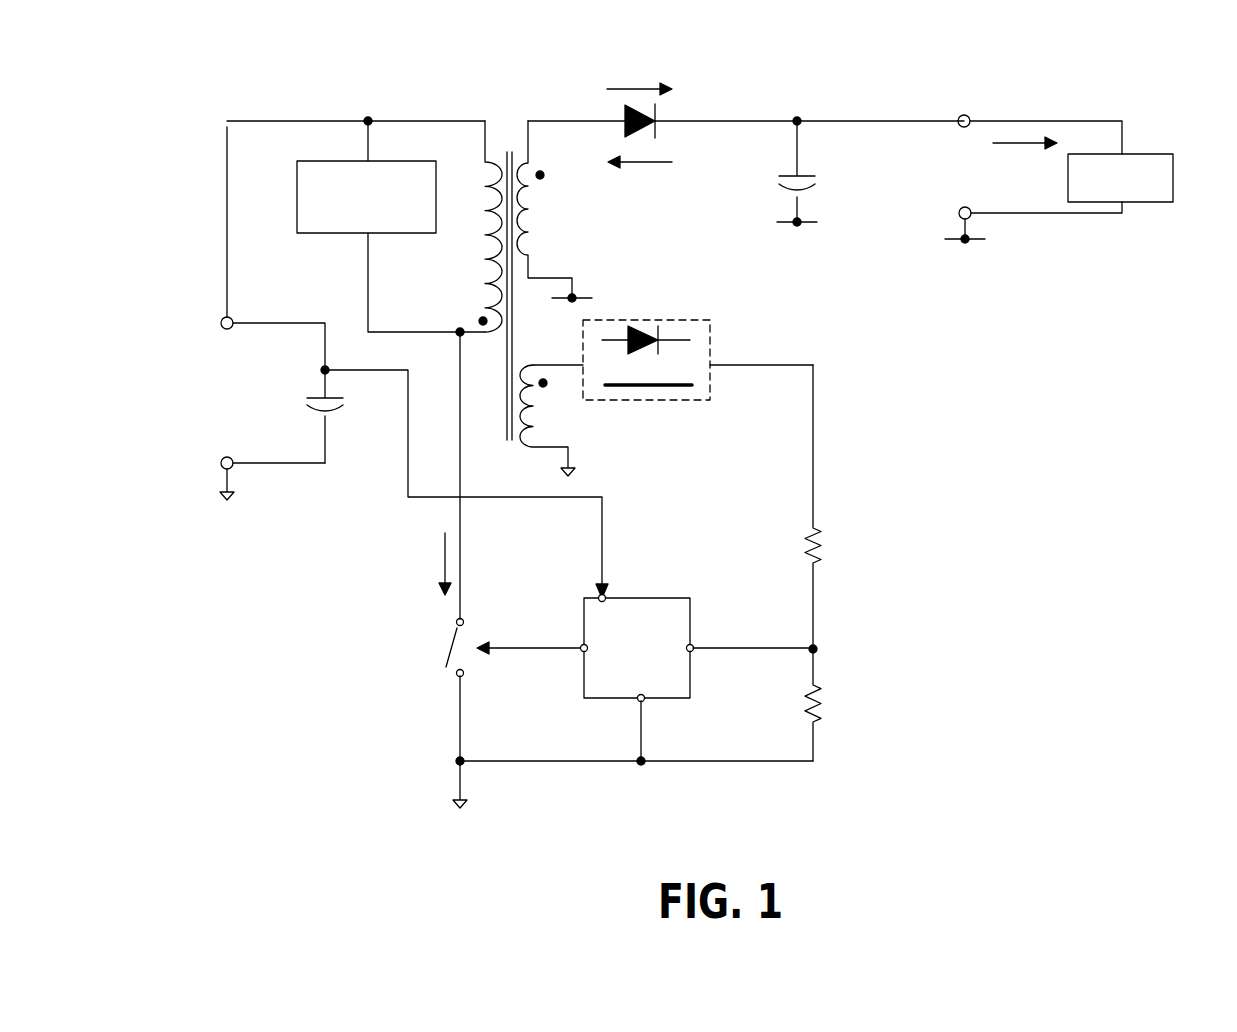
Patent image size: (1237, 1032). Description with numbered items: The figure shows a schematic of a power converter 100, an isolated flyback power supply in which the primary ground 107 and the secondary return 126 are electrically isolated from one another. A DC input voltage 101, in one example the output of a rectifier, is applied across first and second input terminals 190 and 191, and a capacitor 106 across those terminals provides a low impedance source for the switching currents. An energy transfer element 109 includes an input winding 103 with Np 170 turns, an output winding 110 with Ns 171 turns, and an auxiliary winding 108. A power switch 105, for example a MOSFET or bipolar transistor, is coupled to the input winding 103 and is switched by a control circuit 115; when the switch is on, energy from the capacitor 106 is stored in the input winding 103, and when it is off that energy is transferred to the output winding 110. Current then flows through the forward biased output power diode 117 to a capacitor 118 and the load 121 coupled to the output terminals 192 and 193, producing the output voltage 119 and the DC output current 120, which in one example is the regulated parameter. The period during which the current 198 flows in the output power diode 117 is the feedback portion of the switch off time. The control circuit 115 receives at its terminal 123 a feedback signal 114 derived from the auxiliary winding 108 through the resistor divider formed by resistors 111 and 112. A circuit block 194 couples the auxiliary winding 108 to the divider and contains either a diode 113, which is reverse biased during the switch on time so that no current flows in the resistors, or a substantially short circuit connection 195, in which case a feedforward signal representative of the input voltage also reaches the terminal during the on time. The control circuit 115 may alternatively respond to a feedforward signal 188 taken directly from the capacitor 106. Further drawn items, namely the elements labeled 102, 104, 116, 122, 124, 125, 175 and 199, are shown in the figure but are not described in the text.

The power converter 100 is at (222, 62).
The DC input voltage 101 is at (198, 408).
The clamp circuit 102 is at (325, 239).
The input winding 103 is at (483, 193).
The switch current ID 104 is at (440, 552).
The power switch 105 is at (450, 633).
The capacitor 106 is at (307, 407).
The primary ground 107 is at (478, 805).
The auxiliary winding 108 is at (545, 403).
The energy transfer element 109 is at (508, 112).
The output winding 110 is at (543, 187).
The resistor 111 is at (800, 540).
The resistor 112 is at (823, 702).
The diode 113 is at (650, 327).
The feedback signal 114 is at (753, 643).
The control circuit 115 is at (627, 595).
The return node 116 is at (707, 737).
The output power diode 117 is at (662, 132).
The capacitor 118 is at (848, 153).
The output voltage 119 is at (892, 193).
The DC output current 120 is at (1027, 180).
The load 121 is at (1142, 148).
The drive signal 122 is at (525, 653).
The terminal 123 is at (693, 645).
The ground terminal of control circuit 124 is at (635, 705).
The drive output terminal 125 is at (578, 640).
The secondary return 126 is at (795, 232).
The Np 170 is at (445, 272).
The Ns 171 is at (573, 240).
The diode voltage VDIODE 175 is at (655, 203).
The feedforward signal 188 is at (607, 500).
The first input terminal 190 is at (217, 332).
The second input terminal 191 is at (222, 473).
The output terminal 192 is at (975, 118).
The output terminal 193 is at (950, 215).
The circuit block 194 is at (650, 407).
The substantially short circuit connection 195 is at (682, 377).
The current 198 is at (687, 63).
The output line 199 is at (1088, 118).